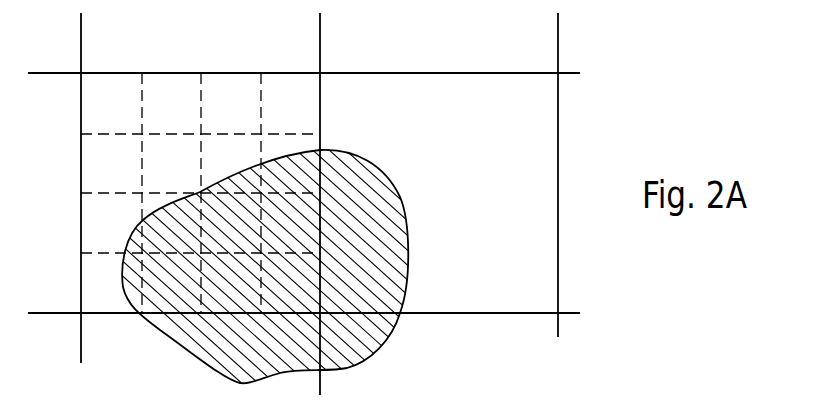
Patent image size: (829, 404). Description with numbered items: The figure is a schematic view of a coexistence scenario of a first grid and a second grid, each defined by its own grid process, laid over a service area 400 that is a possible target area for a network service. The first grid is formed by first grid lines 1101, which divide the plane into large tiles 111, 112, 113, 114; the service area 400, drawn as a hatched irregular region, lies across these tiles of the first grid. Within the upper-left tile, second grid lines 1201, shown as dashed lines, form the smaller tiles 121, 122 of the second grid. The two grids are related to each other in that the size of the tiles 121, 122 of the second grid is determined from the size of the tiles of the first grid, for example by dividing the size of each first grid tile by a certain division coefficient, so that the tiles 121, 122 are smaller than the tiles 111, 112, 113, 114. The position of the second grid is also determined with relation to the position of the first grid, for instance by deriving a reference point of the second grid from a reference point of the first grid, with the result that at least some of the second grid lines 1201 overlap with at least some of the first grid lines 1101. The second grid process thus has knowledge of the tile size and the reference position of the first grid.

The tile of the first grid 111 is at (225, 92).
The first grid lines 1101 is at (82, 102).
The second grid lines 1201 is at (142, 113).
The tile of the first grid 112 is at (488, 206).
The tile of the first grid 113 is at (447, 370).
The tile of the first grid 114 is at (143, 378).
The tile of the second grid 121 is at (125, 96).
The tile of the second grid 122 is at (188, 114).
The service area 400 is at (368, 240).